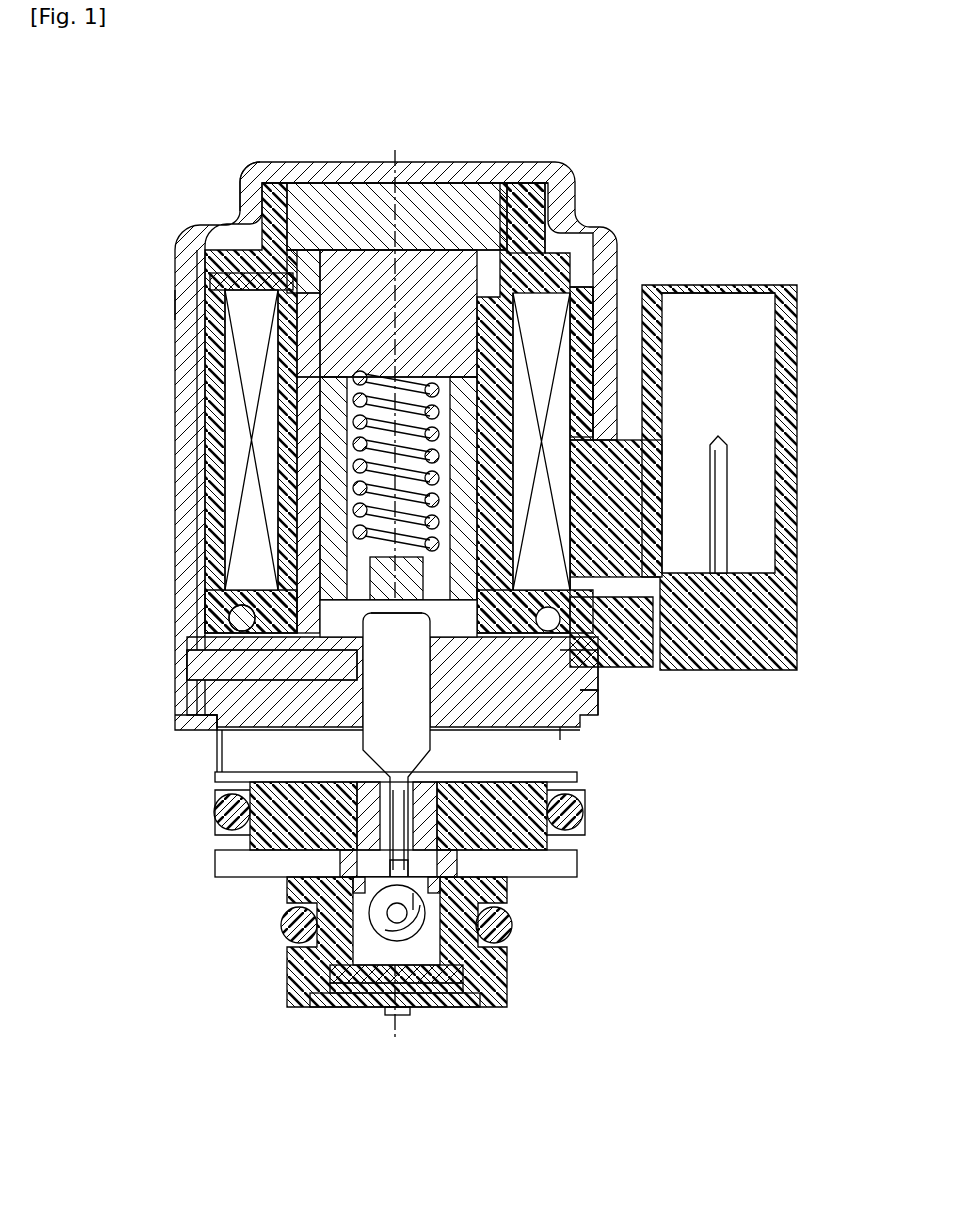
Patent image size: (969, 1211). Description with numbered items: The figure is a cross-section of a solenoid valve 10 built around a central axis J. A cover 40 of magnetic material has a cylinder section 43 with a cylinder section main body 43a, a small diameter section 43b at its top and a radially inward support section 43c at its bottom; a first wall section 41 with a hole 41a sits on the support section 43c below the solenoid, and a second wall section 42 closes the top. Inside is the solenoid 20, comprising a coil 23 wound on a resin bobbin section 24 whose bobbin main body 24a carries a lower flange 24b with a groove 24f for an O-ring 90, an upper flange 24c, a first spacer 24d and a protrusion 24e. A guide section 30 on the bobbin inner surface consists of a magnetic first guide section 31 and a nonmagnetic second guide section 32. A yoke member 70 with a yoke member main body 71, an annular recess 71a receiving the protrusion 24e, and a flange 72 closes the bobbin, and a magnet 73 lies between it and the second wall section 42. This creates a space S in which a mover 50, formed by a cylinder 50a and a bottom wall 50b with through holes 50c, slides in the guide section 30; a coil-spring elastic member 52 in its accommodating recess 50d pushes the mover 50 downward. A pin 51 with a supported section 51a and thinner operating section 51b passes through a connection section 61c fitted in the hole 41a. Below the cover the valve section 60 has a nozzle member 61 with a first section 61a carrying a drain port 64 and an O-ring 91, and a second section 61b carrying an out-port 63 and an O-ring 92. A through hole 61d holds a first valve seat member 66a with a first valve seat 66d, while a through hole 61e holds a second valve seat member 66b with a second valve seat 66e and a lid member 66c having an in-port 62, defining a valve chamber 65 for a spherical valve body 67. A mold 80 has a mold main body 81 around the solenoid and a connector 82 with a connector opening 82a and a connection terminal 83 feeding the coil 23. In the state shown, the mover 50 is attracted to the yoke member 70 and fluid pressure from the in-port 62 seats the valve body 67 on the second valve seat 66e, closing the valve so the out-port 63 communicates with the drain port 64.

The solenoid valve 10 is at (682, 133).
The central axis J is at (395, 148).
The solenoid 20 is at (566, 330).
The coil 23 is at (560, 348).
The bobbin section 24 is at (547, 258).
The bobbin main body 24a is at (600, 593).
The lower flange 24b is at (572, 620).
The upper flange 24c is at (580, 300).
The first spacer 24d is at (618, 412).
The protrusion 24e is at (525, 252).
The groove 24f is at (228, 614).
The guide section 30 is at (648, 702).
The first guide section 31 is at (588, 697).
The second guide section 32 is at (565, 738).
The cover 40 is at (558, 162).
The first wall section 41 is at (222, 680).
The hole 41a is at (245, 715).
The second wall section 42 is at (408, 162).
The cylinder section 43 is at (172, 268).
The cylinder section main body 43a is at (178, 305).
The small diameter section 43b is at (238, 200).
The support section 43c is at (215, 726).
The mover 50 is at (104, 418).
The cylinder 50a is at (318, 425).
The bottom wall 50b is at (345, 570).
The through hole 50c is at (378, 578).
The accommodating recess 50d is at (424, 375).
The pin 51 is at (434, 746).
The supported section 51a is at (368, 656).
The operating section 51b is at (412, 866).
The elastic member 52 is at (352, 398).
The valve section 60 is at (612, 838).
The nozzle member 61 is at (112, 858).
The first section 61a is at (252, 784).
The second section 61b is at (338, 877).
The connection section 61c is at (238, 772).
The through hole 61d is at (305, 892).
The through hole 61e is at (440, 1008).
The in-port 62 is at (383, 985).
The out-port 63 is at (478, 882).
The drain port 64 is at (578, 775).
The valve chamber 65 is at (370, 950).
The first valve seat member 66a is at (458, 856).
The second valve seat member 66b is at (513, 926).
The lid member 66c is at (345, 994).
The first valve seat 66d is at (584, 814).
The second valve seat 66e is at (425, 918).
The valve body 67 is at (404, 933).
The yoke member 70 is at (472, 242).
The yoke member main body 71 is at (345, 300).
The recess 71a is at (296, 336).
The flange 72 is at (278, 248).
The magnet 73 is at (362, 200).
The mold 80 is at (799, 282).
The mold main body 81 is at (590, 380).
The connector 82 is at (800, 376).
The connector opening 82a is at (774, 332).
The connection terminal 83 is at (722, 470).
The O-ring 90 is at (575, 660).
The O-ring 91 is at (590, 820).
The O-ring 92 is at (505, 948).
The space S is at (343, 622).